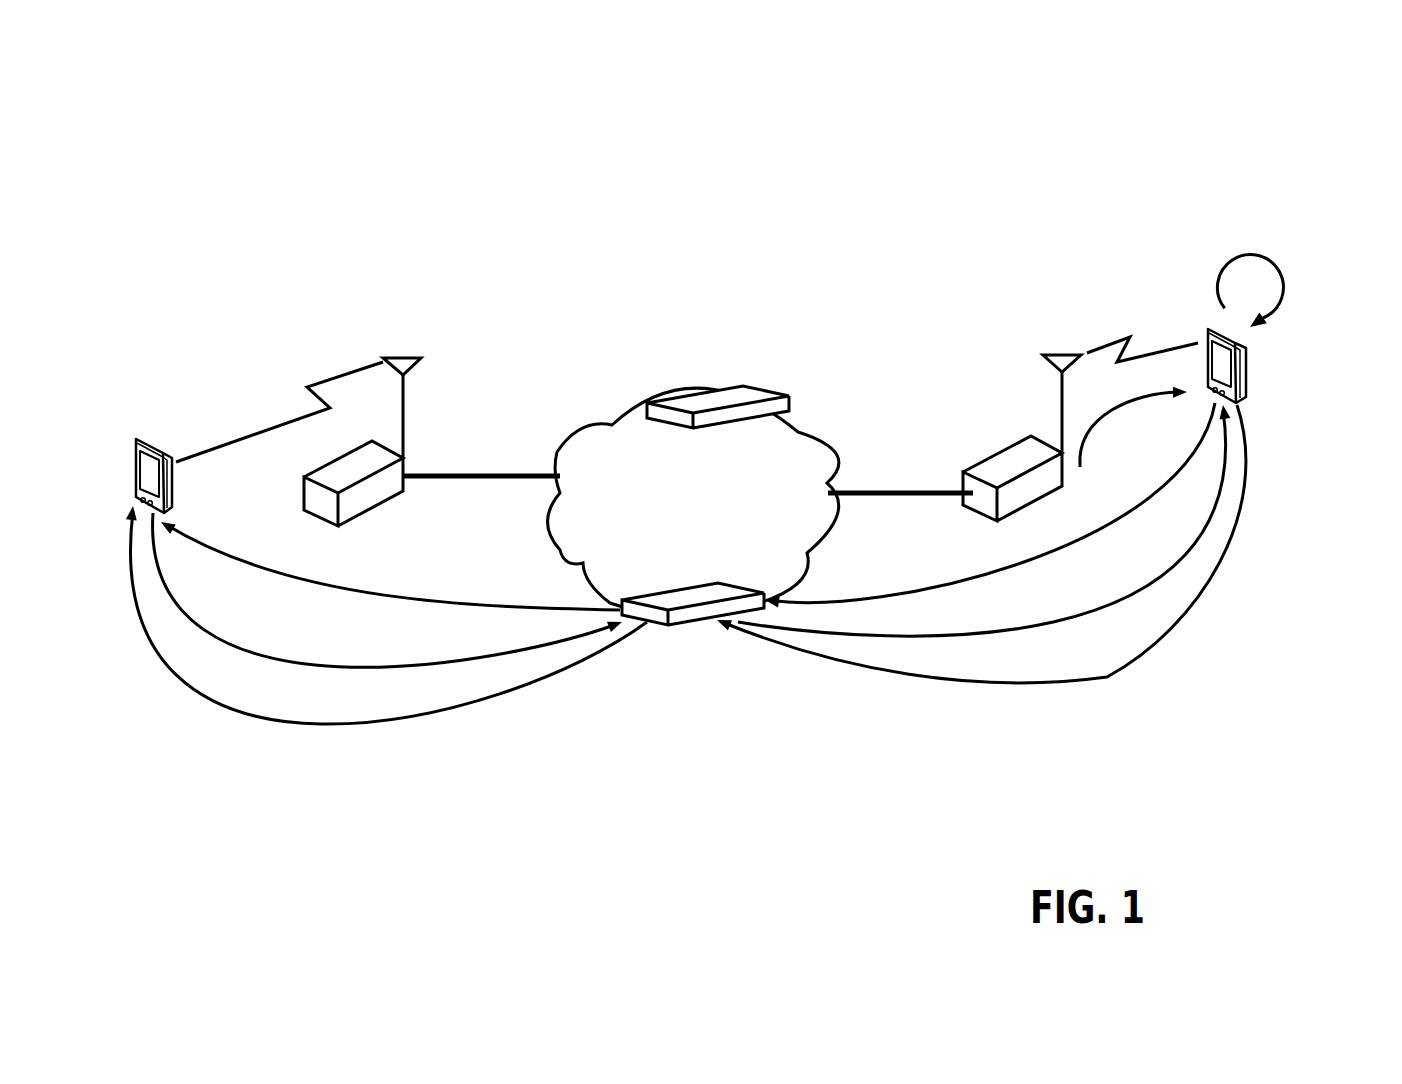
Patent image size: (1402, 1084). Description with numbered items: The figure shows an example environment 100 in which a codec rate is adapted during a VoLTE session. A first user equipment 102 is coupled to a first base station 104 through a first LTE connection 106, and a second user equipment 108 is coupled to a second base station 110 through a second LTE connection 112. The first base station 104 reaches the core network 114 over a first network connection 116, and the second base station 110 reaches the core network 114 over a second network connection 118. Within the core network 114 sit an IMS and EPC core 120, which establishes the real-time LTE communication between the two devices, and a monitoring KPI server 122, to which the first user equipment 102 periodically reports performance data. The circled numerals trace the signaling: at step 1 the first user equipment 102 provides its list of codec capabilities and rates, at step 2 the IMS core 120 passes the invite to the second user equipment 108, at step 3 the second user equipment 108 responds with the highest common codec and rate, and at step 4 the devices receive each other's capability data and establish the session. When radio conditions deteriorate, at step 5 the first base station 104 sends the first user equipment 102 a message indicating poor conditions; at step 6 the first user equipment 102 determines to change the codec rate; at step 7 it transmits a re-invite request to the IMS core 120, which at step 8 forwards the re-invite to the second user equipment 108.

The environment 100 is at (207, 192).
The first user equipment 102 is at (1248, 363).
The first base station 104 is at (1020, 457).
The first LTE connection 106 is at (1153, 350).
The second user equipment 108 is at (143, 433).
The second base station 110 is at (373, 487).
The second LTE connection 112 is at (295, 415).
The core network 114 is at (780, 518).
The first network connection 116 is at (899, 486).
The second network connection 118 is at (470, 468).
The IMS and EPC core 120 is at (686, 622).
The monitoring KPI server 122 is at (741, 386).
The capabilities list provision 1 is at (990, 505).
The invite forwarding 2 is at (390, 566).
The capability response 3 is at (387, 594).
The capability data receipt 4 is at (984, 521).
The poor network conditions message 5 is at (1133, 427).
The codec rate change determination 6 is at (1253, 284).
The re-invite request 7 is at (981, 550).
The re-invite forwarding 8 is at (386, 624).